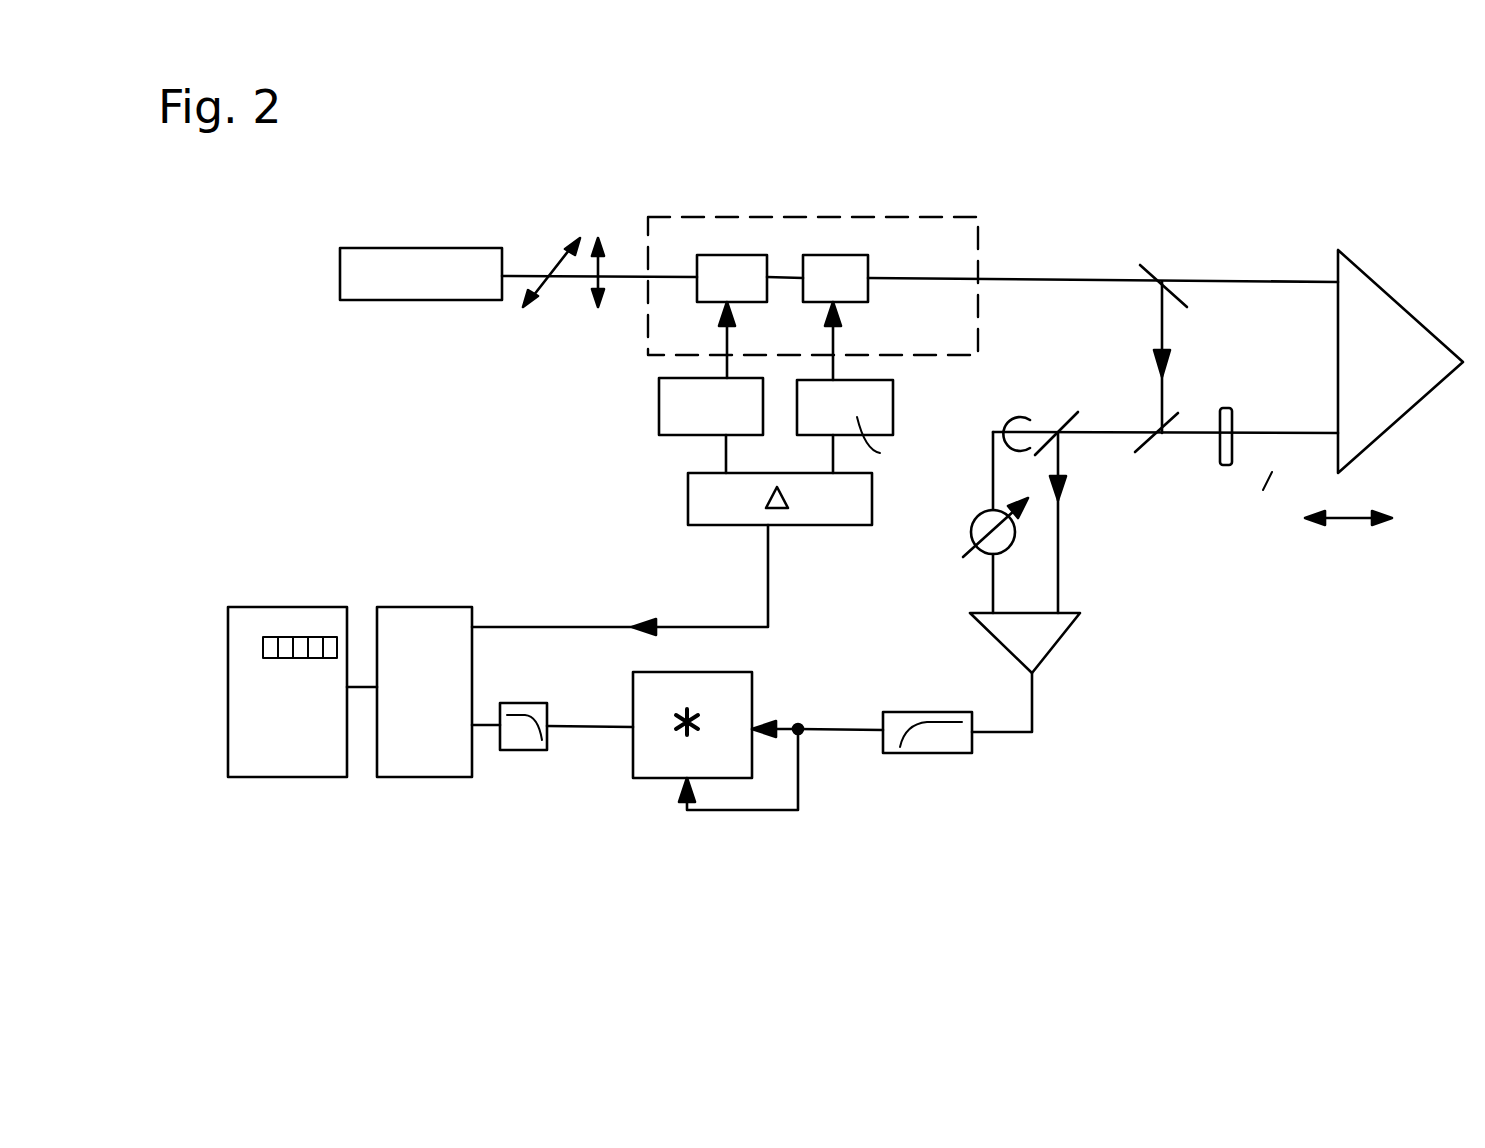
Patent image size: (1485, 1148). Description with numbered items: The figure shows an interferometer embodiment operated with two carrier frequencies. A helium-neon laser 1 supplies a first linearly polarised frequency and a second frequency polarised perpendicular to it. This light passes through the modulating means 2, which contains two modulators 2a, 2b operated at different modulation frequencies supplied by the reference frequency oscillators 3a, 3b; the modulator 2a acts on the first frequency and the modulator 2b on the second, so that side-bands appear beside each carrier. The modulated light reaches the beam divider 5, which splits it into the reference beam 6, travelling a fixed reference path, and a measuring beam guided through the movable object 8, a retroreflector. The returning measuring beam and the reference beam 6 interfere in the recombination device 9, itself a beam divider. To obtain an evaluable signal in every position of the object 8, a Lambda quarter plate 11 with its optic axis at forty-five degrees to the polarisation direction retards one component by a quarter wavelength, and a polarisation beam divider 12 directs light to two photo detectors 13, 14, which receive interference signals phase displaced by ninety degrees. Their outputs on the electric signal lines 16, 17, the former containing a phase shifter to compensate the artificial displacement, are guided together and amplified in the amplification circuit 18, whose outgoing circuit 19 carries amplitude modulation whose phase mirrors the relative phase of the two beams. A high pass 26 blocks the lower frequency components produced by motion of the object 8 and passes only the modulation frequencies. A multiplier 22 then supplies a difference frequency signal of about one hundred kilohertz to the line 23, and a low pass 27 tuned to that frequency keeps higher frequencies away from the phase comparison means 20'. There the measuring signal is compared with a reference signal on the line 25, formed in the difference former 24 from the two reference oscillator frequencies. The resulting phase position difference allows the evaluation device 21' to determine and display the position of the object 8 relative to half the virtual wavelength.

The helium-neon laser 1 is at (378, 272).
The modulating means 2 is at (697, 212).
The modulator 2a is at (725, 270).
The modulator 2b is at (828, 270).
The reference frequency oscillator 3a is at (657, 412).
The reference frequency oscillator 3b is at (895, 398).
The beam divider 5 is at (1148, 260).
The reference beam 6 is at (1163, 373).
The object 8 is at (1377, 322).
The recombination device 9 is at (1147, 447).
The Lambda quarter plate 11 is at (1227, 465).
The polarisation beam divider 12 is at (1075, 413).
The photo detector 13 is at (1062, 500).
The photo detector 14 is at (1017, 418).
The electric signal line 16 is at (990, 578).
The electric signal line 17 is at (1058, 563).
The amplification circuit 18 is at (1033, 640).
The outgoing circuit 19 is at (1035, 712).
The phase comparison means 20' is at (416, 741).
The evaluation device 21' is at (287, 741).
The multiplier 22 is at (672, 747).
The line 23 is at (597, 725).
The difference former 24 is at (713, 497).
The line 25 is at (553, 623).
The high pass 26 is at (938, 755).
The low pass 27 is at (522, 752).